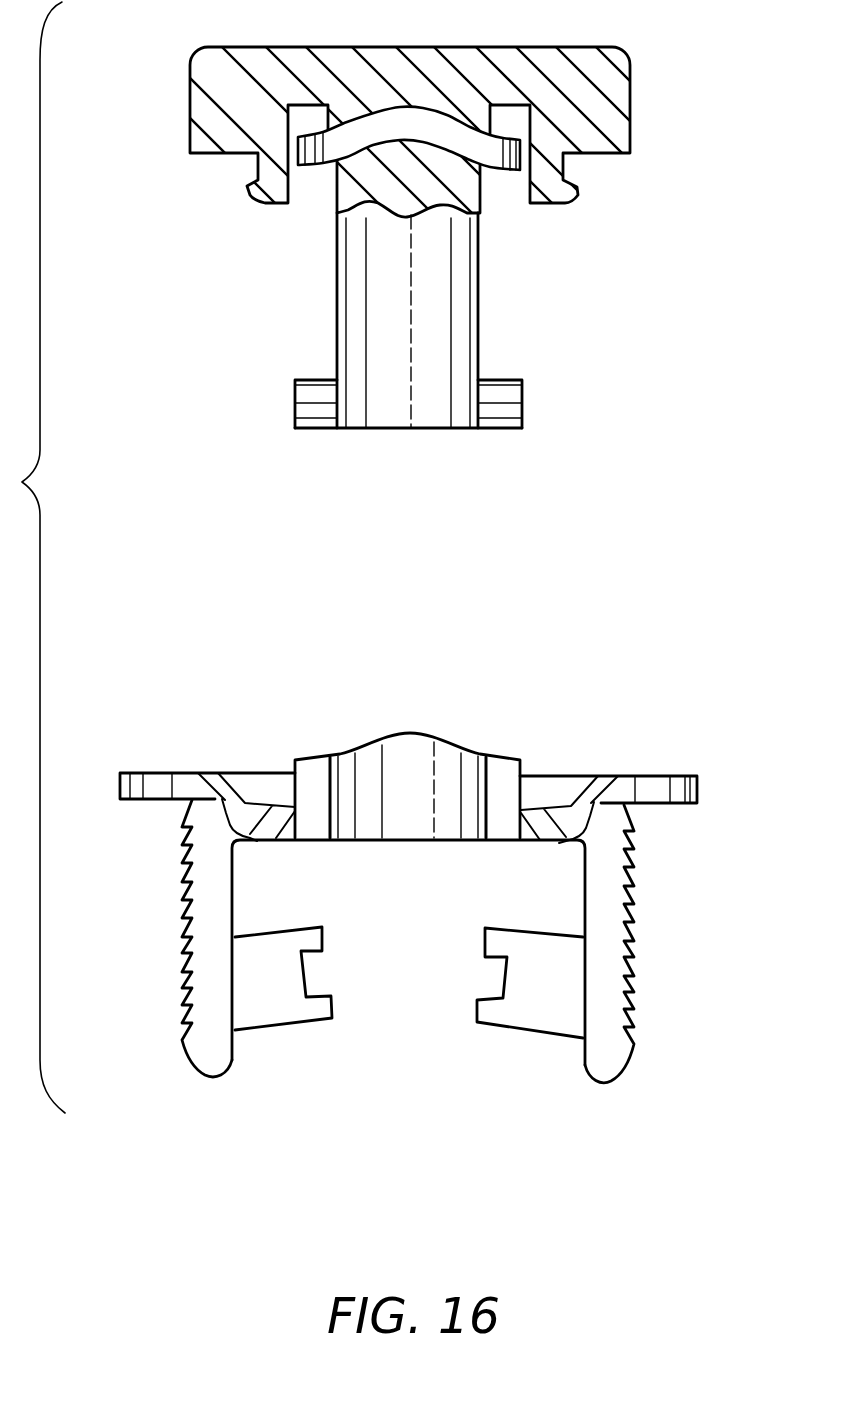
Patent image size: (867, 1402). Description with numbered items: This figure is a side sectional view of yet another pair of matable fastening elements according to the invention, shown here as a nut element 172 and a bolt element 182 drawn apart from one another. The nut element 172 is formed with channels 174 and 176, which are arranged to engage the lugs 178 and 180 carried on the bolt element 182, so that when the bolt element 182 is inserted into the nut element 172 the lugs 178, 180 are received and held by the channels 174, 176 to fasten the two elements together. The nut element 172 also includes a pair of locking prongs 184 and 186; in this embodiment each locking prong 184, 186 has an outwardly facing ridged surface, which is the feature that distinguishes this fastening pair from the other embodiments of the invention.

The nut element 172 is at (652, 770).
The channel 174 is at (503, 975).
The channel 176 is at (305, 972).
The lug 178 is at (510, 398).
The lug 180 is at (308, 401).
The bolt element 182 is at (645, 88).
The locking prong 184 is at (195, 1042).
The locking prong 186 is at (612, 1052).